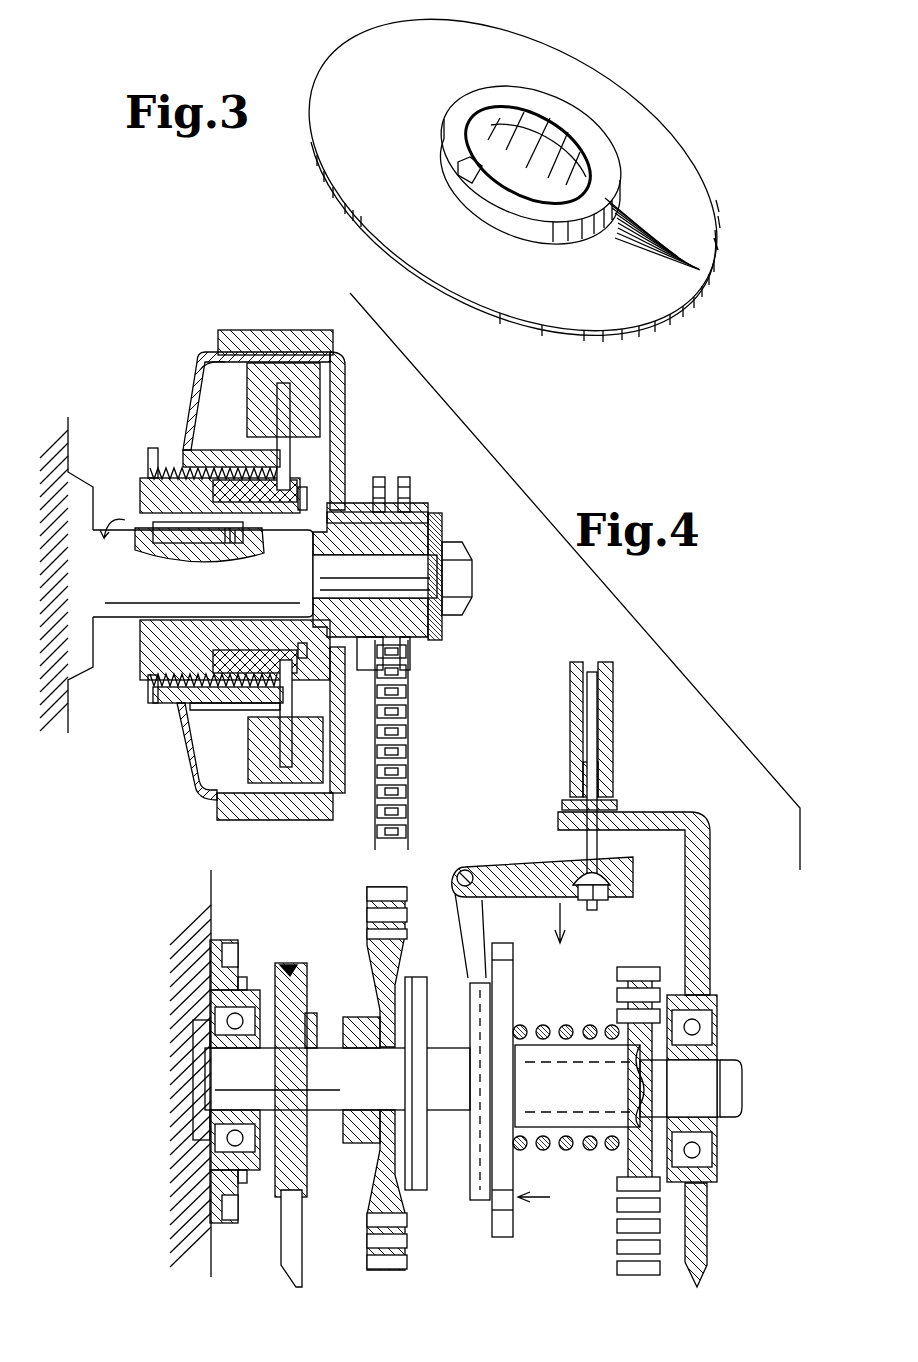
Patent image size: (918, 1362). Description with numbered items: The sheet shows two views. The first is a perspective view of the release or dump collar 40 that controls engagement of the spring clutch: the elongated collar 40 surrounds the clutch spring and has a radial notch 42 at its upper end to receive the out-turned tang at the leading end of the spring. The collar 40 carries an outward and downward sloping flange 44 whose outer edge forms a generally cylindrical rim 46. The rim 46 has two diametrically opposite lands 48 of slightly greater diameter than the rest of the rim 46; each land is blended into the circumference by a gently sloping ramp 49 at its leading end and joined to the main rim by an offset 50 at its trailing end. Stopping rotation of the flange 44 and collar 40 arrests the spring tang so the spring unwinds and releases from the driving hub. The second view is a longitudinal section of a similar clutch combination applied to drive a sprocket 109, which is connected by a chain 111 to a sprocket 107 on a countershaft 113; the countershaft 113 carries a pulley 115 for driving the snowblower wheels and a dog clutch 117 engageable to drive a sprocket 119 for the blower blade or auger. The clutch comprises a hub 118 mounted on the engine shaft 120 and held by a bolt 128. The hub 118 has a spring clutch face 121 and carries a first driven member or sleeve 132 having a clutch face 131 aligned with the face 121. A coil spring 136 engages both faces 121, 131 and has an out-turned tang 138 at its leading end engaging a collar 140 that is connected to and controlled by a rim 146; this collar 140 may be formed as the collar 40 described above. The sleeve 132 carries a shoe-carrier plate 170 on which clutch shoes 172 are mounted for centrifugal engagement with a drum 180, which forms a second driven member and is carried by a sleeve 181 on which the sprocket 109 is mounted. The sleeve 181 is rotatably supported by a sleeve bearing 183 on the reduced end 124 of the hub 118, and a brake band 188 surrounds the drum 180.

In FIG. 3, the release collar 40 is at (577, 127).
In FIG. 3, the radial notch 42 is at (468, 182).
In FIG. 3, the flange 44 is at (531, 284).
In FIG. 3, the rim 46 is at (554, 326).
In FIG. 3, the lands 48 is at (329, 184).
In FIG. 3, the ramp 49 is at (314, 150).
In FIG. 3, the offset 50 is at (352, 211).
In FIG. 4, the sprocket 107 is at (378, 960).
In FIG. 4, the sprocket 109 is at (392, 500).
In FIG. 4, the chain 111 is at (412, 742).
In FIG. 4, the countershaft 113 is at (218, 1078).
In FIG. 4, the pulley 115 is at (296, 1182).
In FIG. 4, the dog clutch 117 is at (483, 1195).
In FIG. 4, the hub 118 is at (150, 643).
In FIG. 4, the sprocket 119 is at (632, 1165).
In FIG. 4, the engine shaft 120 is at (178, 587).
In FIG. 4, the spring clutch face 121 is at (147, 483).
In FIG. 4, the reduced end 124 is at (418, 620).
In FIG. 4, the bolt 128 is at (463, 582).
In FIG. 4, the clutch face 131 is at (268, 518).
In FIG. 4, the sleeve 132 is at (268, 492).
In FIG. 4, the coil spring 136 is at (172, 478).
In FIG. 4, the out-turned tang 138 is at (150, 447).
In FIG. 4, the collar 140 is at (218, 557).
In FIG. 4, the rim 146 is at (198, 370).
In FIG. 4, the shoe-carrier plate 170 is at (285, 450).
In FIG. 4, the clutch shoes 172 is at (316, 396).
In FIG. 4, the drum 180 is at (303, 357).
In FIG. 4, the sleeve 181 is at (347, 492).
In FIG. 4, the sleeve bearing 183 is at (412, 518).
In FIG. 4, the brake band 188 is at (295, 330).